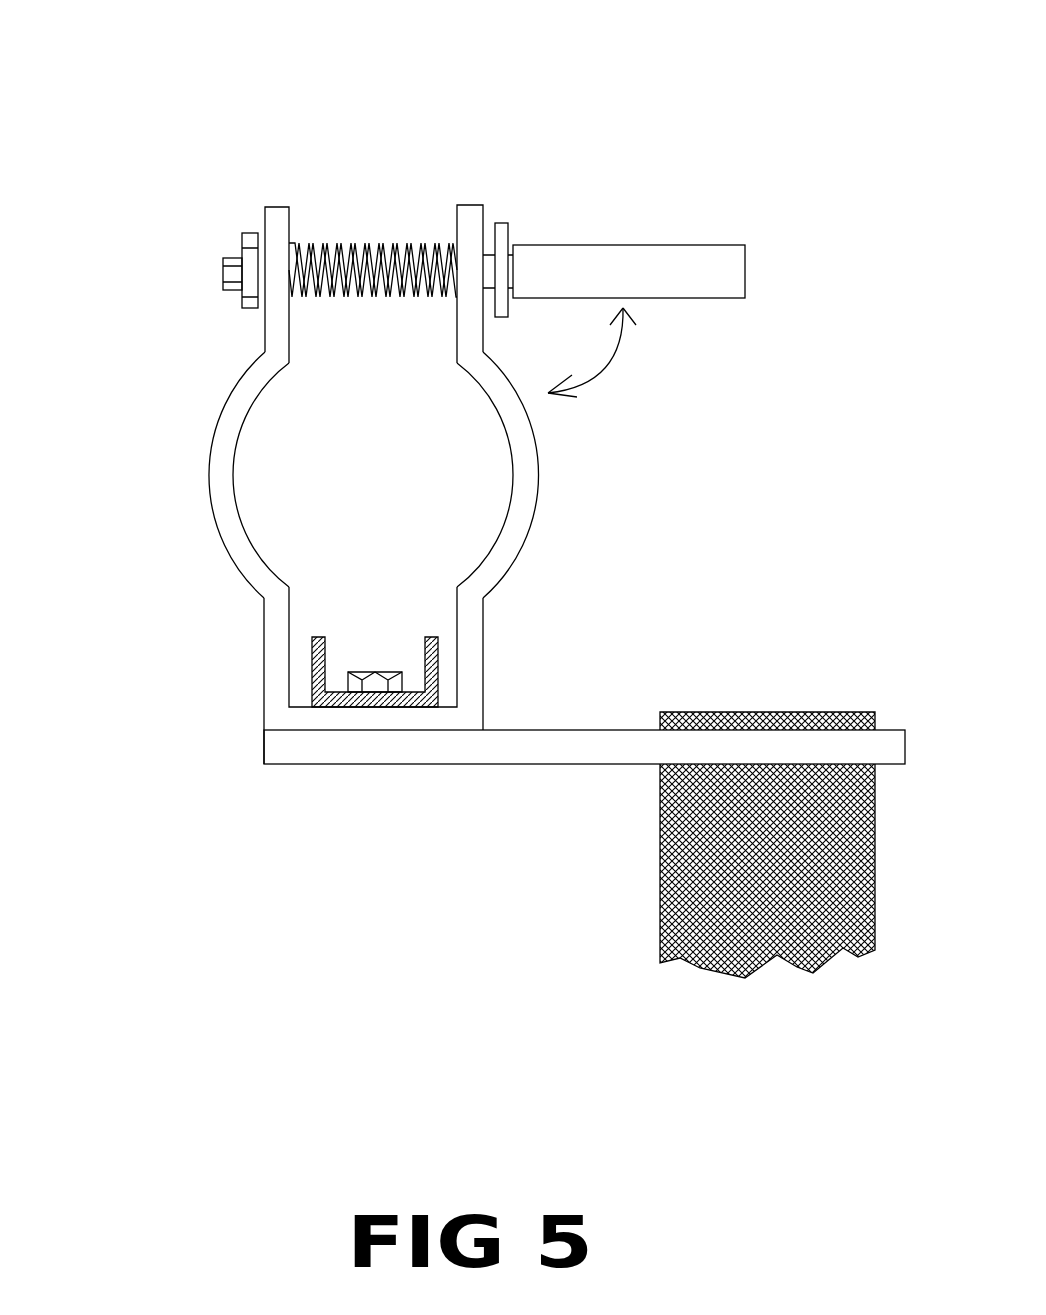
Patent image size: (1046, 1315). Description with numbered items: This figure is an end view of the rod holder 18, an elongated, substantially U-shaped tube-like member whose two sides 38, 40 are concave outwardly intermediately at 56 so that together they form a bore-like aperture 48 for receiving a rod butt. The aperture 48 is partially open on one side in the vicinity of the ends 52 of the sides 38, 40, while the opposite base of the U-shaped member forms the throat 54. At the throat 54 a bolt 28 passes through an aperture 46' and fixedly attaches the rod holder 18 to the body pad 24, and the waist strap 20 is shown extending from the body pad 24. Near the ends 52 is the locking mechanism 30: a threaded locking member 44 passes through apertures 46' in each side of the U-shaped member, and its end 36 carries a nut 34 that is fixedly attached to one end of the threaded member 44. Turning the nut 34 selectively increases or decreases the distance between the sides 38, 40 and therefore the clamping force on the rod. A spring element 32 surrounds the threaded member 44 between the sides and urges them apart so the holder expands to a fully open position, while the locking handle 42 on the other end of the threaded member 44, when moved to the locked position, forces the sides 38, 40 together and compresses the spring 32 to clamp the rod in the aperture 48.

The rod holder 18 is at (400, 422).
The waist strap 20 is at (848, 892).
The body pad 24 is at (625, 768).
The bolt 28 is at (365, 673).
The locking mechanism 30 is at (669, 219).
The spring element 32 is at (372, 241).
The nut 34 is at (311, 160).
The end of threaded member 36 is at (205, 302).
The first side 38 is at (289, 362).
The second side 40 is at (480, 382).
The locking handle 42 is at (670, 245).
The threaded locking member 44 is at (413, 203).
The apertures 46' is at (356, 403).
The bore-like aperture 48 is at (315, 515).
The ends of sides 52 is at (371, 284).
The throat 54 is at (443, 705).
The outwardly concave portion 56 is at (214, 472).